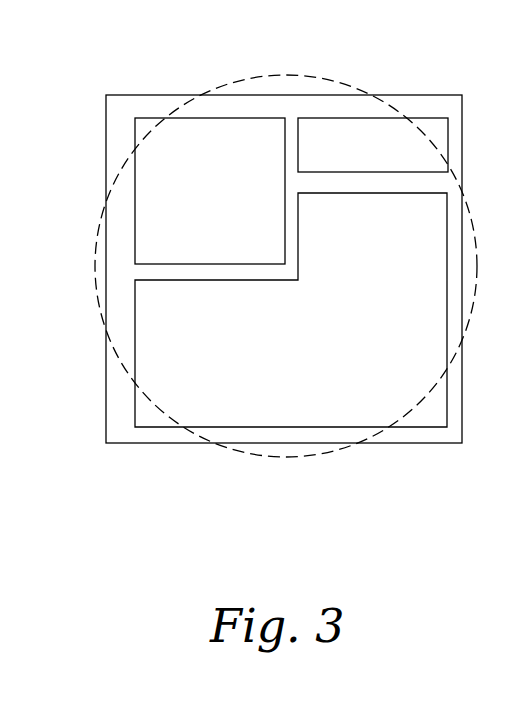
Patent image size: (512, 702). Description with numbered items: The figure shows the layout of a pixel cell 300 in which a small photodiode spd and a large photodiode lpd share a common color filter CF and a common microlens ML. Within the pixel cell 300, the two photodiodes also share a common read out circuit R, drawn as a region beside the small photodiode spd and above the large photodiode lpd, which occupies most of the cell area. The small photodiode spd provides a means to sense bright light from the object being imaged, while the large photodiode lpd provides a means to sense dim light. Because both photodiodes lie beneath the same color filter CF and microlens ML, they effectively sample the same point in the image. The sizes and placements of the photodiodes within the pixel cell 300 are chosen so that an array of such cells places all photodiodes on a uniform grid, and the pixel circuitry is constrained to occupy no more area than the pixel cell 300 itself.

The pixel cell 300 is at (254, 240).
The color filter CF is at (173, 67).
The microlens ML is at (87, 258).
The read out circuit R is at (373, 145).
The small photodiode spd is at (210, 191).
The large photodiode lpd is at (291, 310).